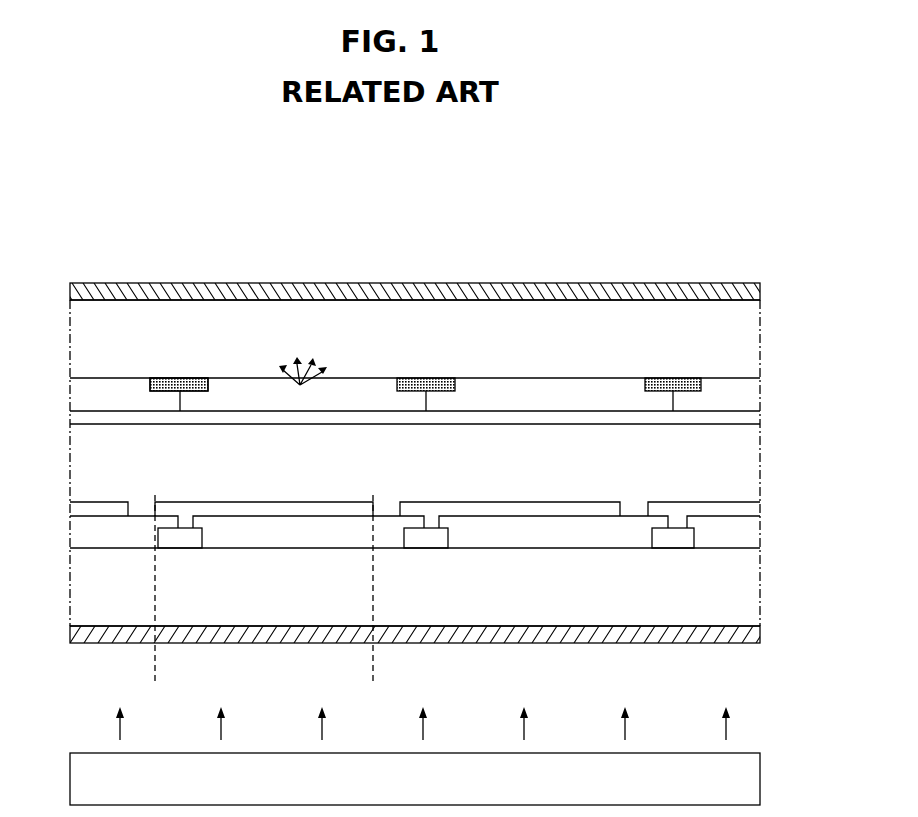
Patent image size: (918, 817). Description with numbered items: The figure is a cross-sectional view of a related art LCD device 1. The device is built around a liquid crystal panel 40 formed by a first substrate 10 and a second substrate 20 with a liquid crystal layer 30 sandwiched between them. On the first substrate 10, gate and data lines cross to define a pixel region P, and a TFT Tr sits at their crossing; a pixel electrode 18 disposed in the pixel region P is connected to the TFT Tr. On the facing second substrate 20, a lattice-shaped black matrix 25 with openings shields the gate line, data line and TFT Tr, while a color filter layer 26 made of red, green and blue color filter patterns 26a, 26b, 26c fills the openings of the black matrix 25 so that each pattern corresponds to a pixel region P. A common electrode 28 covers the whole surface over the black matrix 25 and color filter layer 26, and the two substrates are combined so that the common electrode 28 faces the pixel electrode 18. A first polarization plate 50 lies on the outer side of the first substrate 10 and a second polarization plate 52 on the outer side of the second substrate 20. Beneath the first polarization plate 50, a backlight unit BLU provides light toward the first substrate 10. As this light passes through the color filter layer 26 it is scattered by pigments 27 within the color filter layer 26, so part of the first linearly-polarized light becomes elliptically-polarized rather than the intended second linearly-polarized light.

The LCD device 1 is at (725, 185).
The second polarization plate 52 is at (609, 288).
The first polarization plate 50 is at (665, 632).
The liquid crystal panel 40 is at (70, 300).
The second substrate 20 is at (716, 341).
The first substrate 10 is at (716, 599).
The black matrix 25 is at (181, 379).
The color filter layer 26 is at (415, 359).
The red color filter pattern 26a is at (366, 385).
The green color filter pattern 26b is at (485, 389).
The blue color filter pattern 26c is at (713, 388).
The pigments 27 is at (301, 388).
The common electrode 28 is at (745, 416).
The liquid crystal layer 30 is at (745, 463).
The pixel electrode 18 is at (275, 506).
The TFT Tr is at (178, 540).
The pixel region P is at (155, 673).
The element light is at (727, 733).
The backlight unit BLU is at (745, 783).